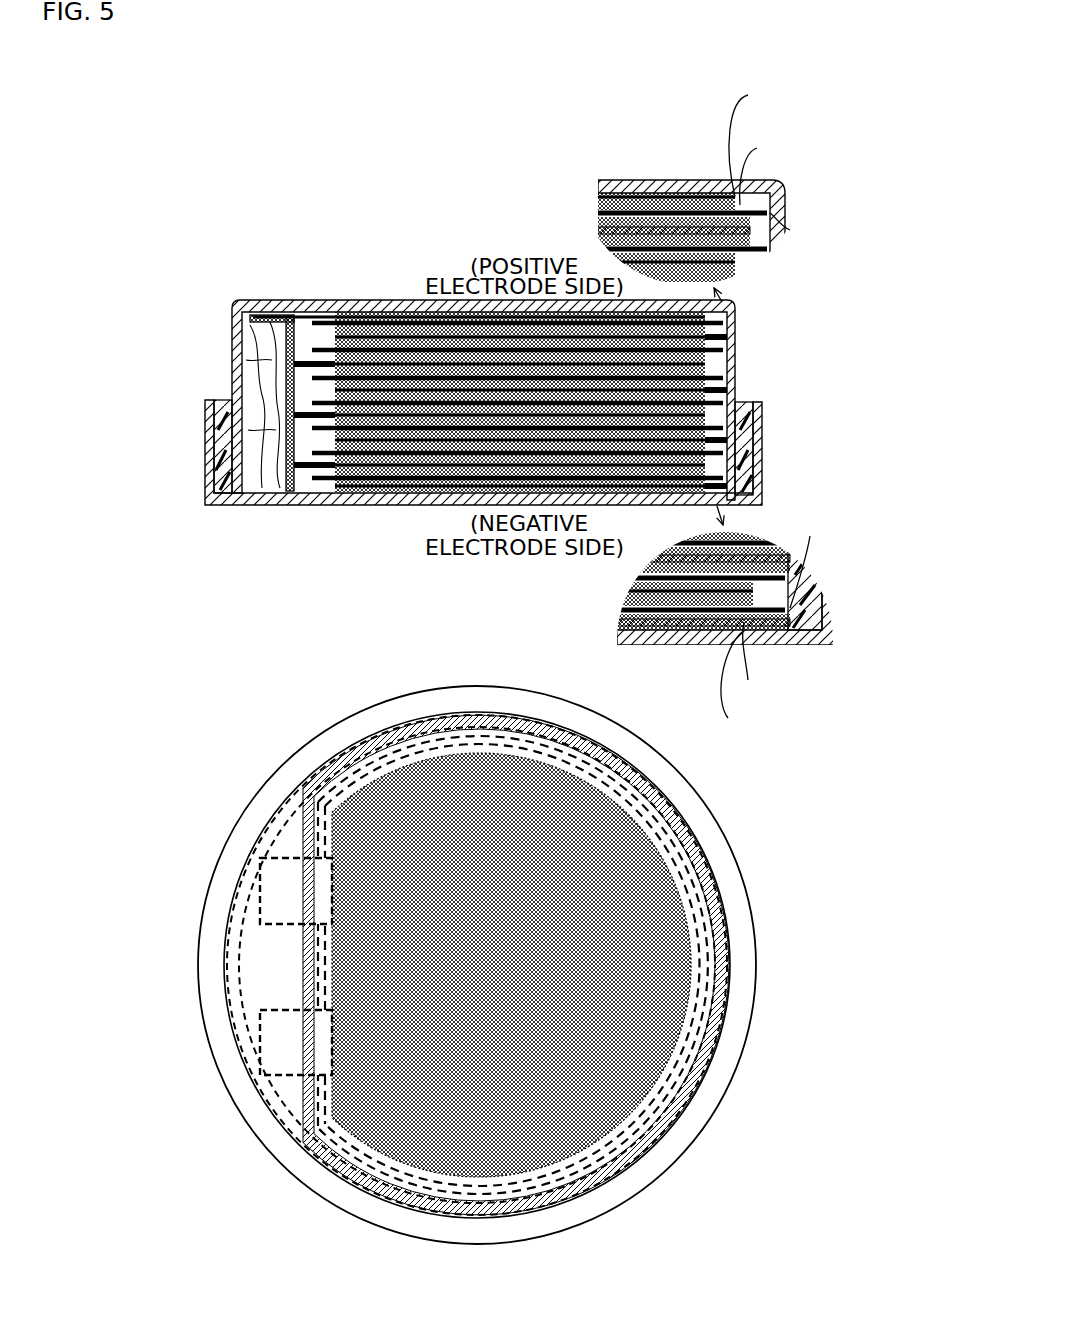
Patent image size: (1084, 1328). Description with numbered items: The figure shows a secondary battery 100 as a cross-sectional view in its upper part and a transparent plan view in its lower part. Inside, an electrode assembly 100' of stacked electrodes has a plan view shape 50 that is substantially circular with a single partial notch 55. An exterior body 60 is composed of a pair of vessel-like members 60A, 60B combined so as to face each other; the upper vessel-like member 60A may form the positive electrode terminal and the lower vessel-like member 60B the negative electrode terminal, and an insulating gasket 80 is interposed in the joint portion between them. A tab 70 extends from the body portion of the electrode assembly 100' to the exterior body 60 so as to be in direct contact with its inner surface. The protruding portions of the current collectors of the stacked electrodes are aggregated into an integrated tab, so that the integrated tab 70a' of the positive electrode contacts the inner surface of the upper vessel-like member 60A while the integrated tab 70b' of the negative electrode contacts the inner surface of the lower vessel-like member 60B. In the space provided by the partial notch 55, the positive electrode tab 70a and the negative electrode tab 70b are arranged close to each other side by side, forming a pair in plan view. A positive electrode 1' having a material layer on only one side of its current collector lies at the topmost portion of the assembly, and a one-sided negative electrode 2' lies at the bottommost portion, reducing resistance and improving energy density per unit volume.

The secondary battery 100 is at (467, 709).
The electrode assembly 100' is at (506, 753).
The exterior body 60 is at (727, 862).
The vessel-like member 60A is at (346, 300).
The vessel-like member 60B is at (346, 505).
The gasket 80 is at (752, 467).
The tab 70 is at (135, 312).
The positive electrode tab 70a is at (235, 611).
The integrated tab of the positive electrode 70a' is at (219, 405).
The negative electrode tab 70b is at (232, 759).
The integrated tab of the negative electrode 70b' is at (211, 451).
The positive electrode 1' is at (780, 184).
The negative electrode 2' is at (785, 641).
The plan view shape 50 is at (498, 977).
The partial notch 55 is at (284, 977).